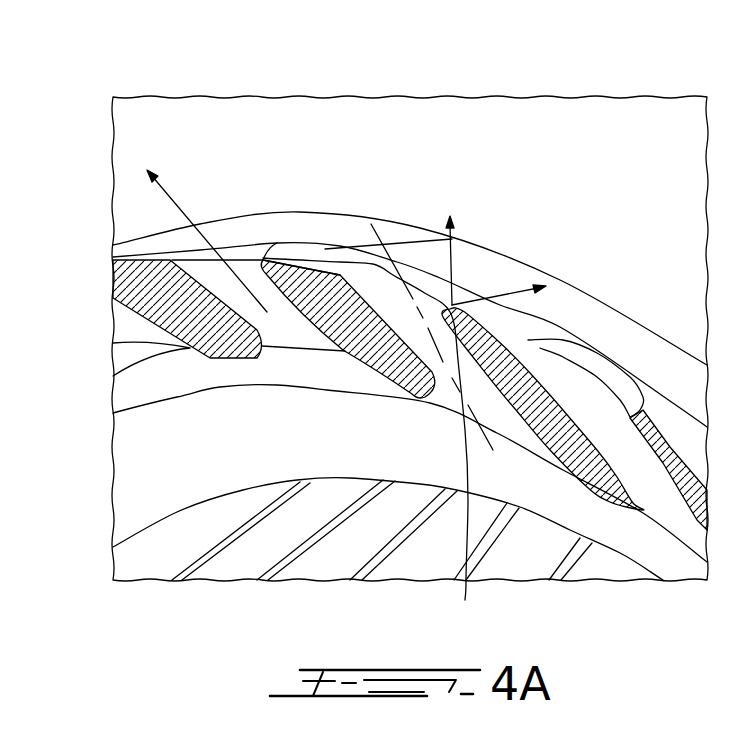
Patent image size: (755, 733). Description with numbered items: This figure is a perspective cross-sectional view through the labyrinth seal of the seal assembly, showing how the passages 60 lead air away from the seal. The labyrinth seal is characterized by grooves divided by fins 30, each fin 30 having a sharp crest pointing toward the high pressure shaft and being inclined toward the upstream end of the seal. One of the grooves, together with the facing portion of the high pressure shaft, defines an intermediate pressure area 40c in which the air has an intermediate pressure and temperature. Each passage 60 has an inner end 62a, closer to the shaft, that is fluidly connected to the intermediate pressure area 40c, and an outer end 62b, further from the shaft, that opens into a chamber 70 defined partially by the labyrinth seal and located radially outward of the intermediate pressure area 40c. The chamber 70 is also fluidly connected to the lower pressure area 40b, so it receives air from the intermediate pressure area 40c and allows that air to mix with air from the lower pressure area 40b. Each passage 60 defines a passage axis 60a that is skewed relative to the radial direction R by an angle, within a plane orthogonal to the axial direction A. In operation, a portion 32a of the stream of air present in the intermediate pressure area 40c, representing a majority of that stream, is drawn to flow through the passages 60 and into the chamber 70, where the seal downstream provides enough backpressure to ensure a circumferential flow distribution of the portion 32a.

The chamber 70 is at (600, 168).
The portion of the stream of air 32a is at (177, 205).
The outer end 62b is at (360, 266).
The passage axis 60a is at (372, 226).
The passage 60 is at (367, 372).
The inner end 62a is at (377, 448).
The intermediate pressure area 40c is at (332, 354).
The fin 30 is at (293, 523).
The lower pressure area 40b is at (749, 689).
The axial direction A is at (453, 244).
The radial direction R is at (512, 287).